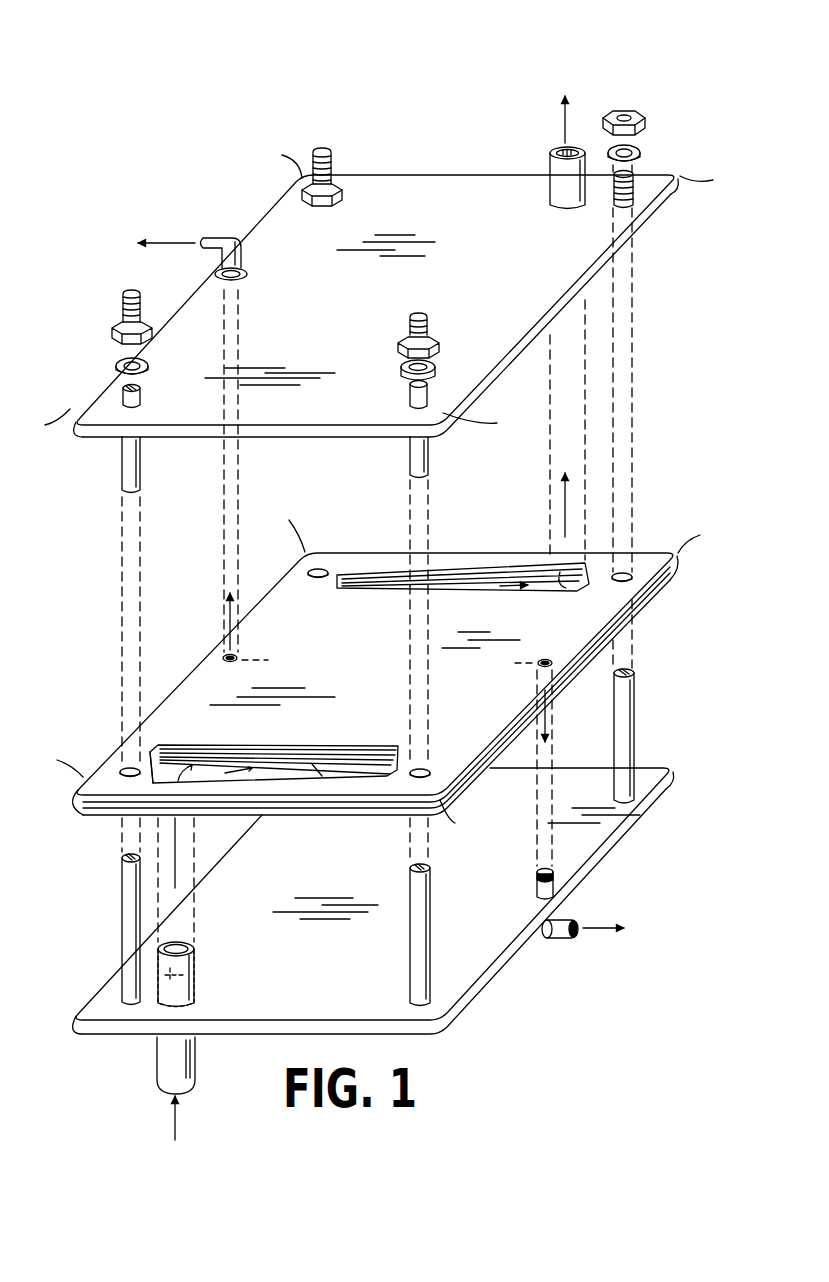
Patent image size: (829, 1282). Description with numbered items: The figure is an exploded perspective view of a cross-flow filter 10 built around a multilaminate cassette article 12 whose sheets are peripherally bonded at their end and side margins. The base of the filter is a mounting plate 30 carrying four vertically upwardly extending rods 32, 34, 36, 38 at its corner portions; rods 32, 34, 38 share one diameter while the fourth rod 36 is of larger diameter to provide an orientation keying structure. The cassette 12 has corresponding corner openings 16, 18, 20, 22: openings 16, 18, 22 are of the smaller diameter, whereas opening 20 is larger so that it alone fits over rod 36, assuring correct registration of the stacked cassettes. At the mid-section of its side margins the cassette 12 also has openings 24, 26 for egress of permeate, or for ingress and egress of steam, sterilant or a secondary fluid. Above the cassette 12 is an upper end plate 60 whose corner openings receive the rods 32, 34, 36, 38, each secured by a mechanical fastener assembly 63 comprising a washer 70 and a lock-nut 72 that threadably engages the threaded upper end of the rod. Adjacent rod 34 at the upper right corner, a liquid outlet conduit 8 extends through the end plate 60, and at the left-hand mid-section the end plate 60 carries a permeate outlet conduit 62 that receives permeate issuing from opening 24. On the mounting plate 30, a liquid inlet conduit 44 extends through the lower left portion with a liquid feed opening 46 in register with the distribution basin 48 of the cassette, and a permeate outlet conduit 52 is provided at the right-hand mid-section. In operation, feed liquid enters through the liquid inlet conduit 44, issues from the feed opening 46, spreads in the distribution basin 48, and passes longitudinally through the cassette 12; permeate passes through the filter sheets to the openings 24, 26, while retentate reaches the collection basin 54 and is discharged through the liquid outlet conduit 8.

The liquid outlet conduit 8 is at (548, 185).
The cross-flow filter 10 is at (391, 597).
The cassette article 12 is at (205, 672).
The opening 16 is at (424, 770).
The opening 18 is at (621, 583).
The opening 20 is at (316, 579).
The opening 22 is at (127, 768).
The opening 24 is at (240, 657).
The opening 26 is at (550, 660).
The mounting plate 30 is at (465, 972).
The rod 32 is at (420, 456).
The rod 34 is at (614, 196).
The rod 36 is at (337, 170).
The rod 38 is at (130, 455).
The liquid inlet conduit 44 is at (186, 1068).
The liquid feed opening 46 is at (194, 966).
The distribution basin 48 is at (350, 770).
The permeate outlet conduit 52 is at (545, 929).
The collection basin 54 is at (538, 578).
The upper end plate 60 is at (607, 236).
The permeate outlet conduit 62 is at (243, 257).
The mechanical fastener assembly 63 is at (357, 200).
The washer 70 is at (645, 156).
The lock-nut 72 is at (603, 117).